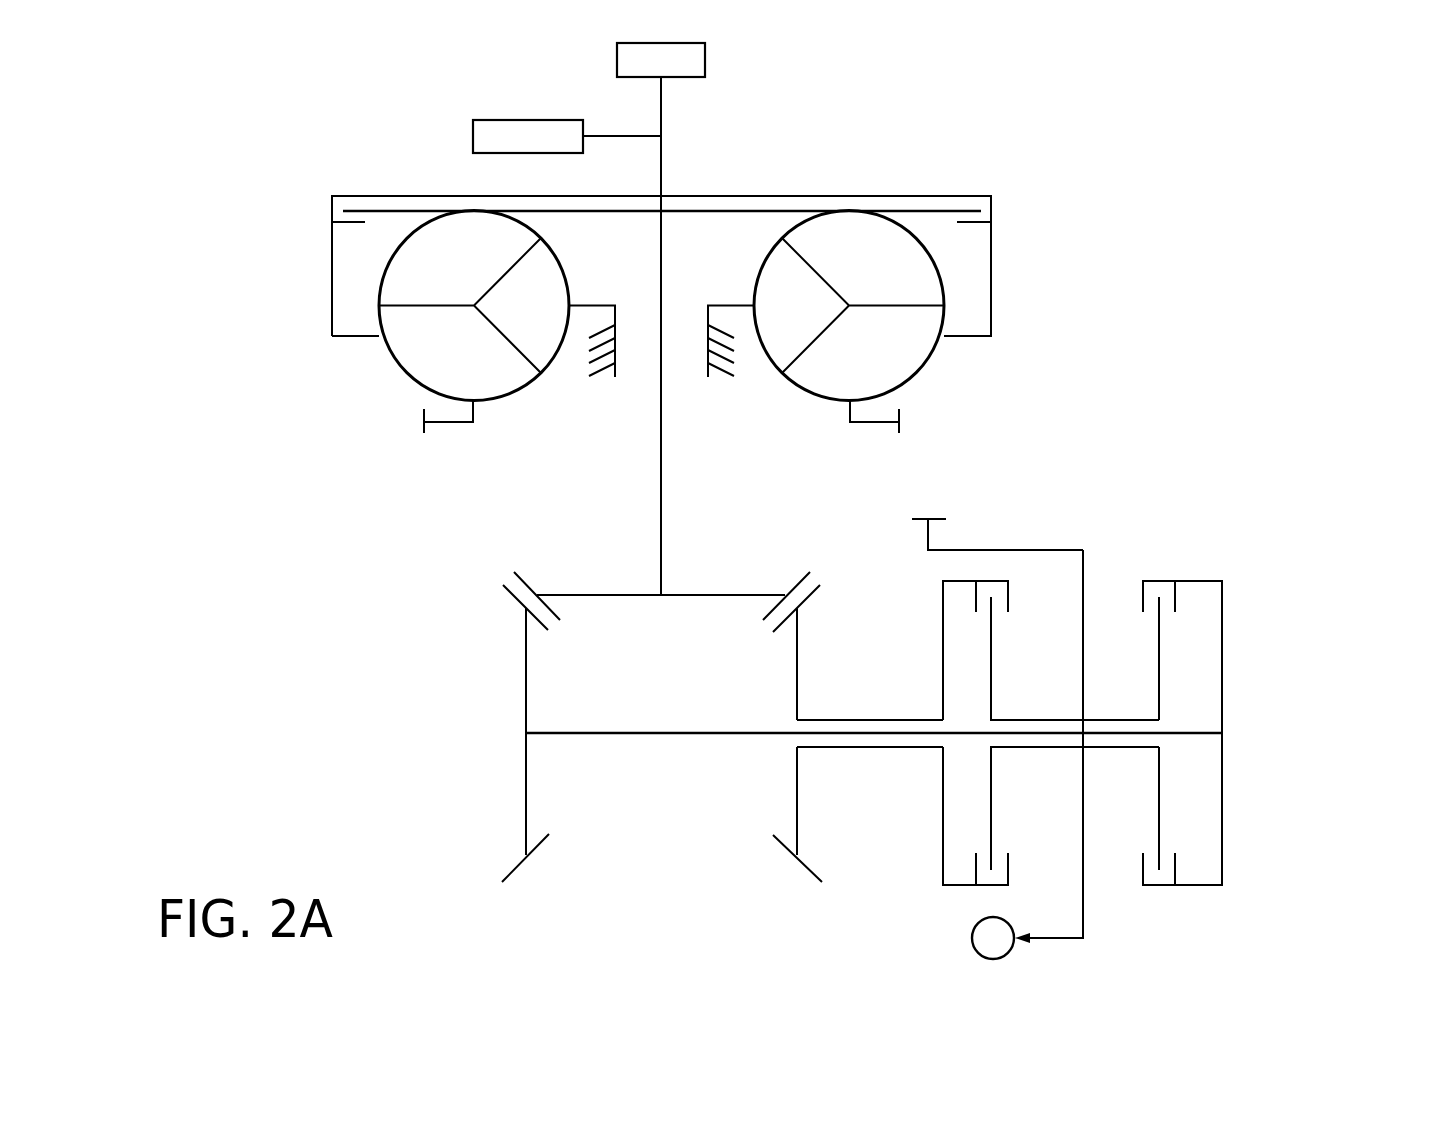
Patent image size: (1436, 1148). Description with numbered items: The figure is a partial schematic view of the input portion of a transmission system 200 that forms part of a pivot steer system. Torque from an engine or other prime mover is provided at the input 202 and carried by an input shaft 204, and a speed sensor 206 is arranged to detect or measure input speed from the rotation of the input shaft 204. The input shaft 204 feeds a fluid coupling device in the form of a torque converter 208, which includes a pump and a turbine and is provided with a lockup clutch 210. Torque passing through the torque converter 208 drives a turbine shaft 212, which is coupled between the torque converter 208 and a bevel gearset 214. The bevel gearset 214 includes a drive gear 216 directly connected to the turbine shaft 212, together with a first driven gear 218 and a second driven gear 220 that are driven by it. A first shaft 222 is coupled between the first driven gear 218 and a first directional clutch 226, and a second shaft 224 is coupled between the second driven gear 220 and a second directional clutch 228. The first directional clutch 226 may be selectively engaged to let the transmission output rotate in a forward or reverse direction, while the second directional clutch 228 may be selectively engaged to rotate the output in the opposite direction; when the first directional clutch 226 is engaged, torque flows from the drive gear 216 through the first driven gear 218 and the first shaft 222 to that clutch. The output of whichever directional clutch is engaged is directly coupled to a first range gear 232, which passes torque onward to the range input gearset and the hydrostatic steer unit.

The transmission system 200 is at (1336, 190).
The input 202 is at (706, 59).
The input shaft 204 is at (662, 104).
The speed sensor 206 is at (500, 120).
The torque converter 208 is at (294, 241).
The lockup clutch 210 is at (1020, 204).
The turbine shaft 212 is at (662, 446).
The bevel gearset 214 is at (628, 708).
The drive gear 216 is at (588, 594).
The first driven gear 218 is at (798, 643).
The second driven gear 220 is at (526, 709).
The first shaft 222 is at (875, 720).
The second shaft 224 is at (634, 735).
The first directional clutch 226 is at (920, 586).
The second directional clutch 228 is at (1252, 602).
The first range gear 232 is at (1084, 912).